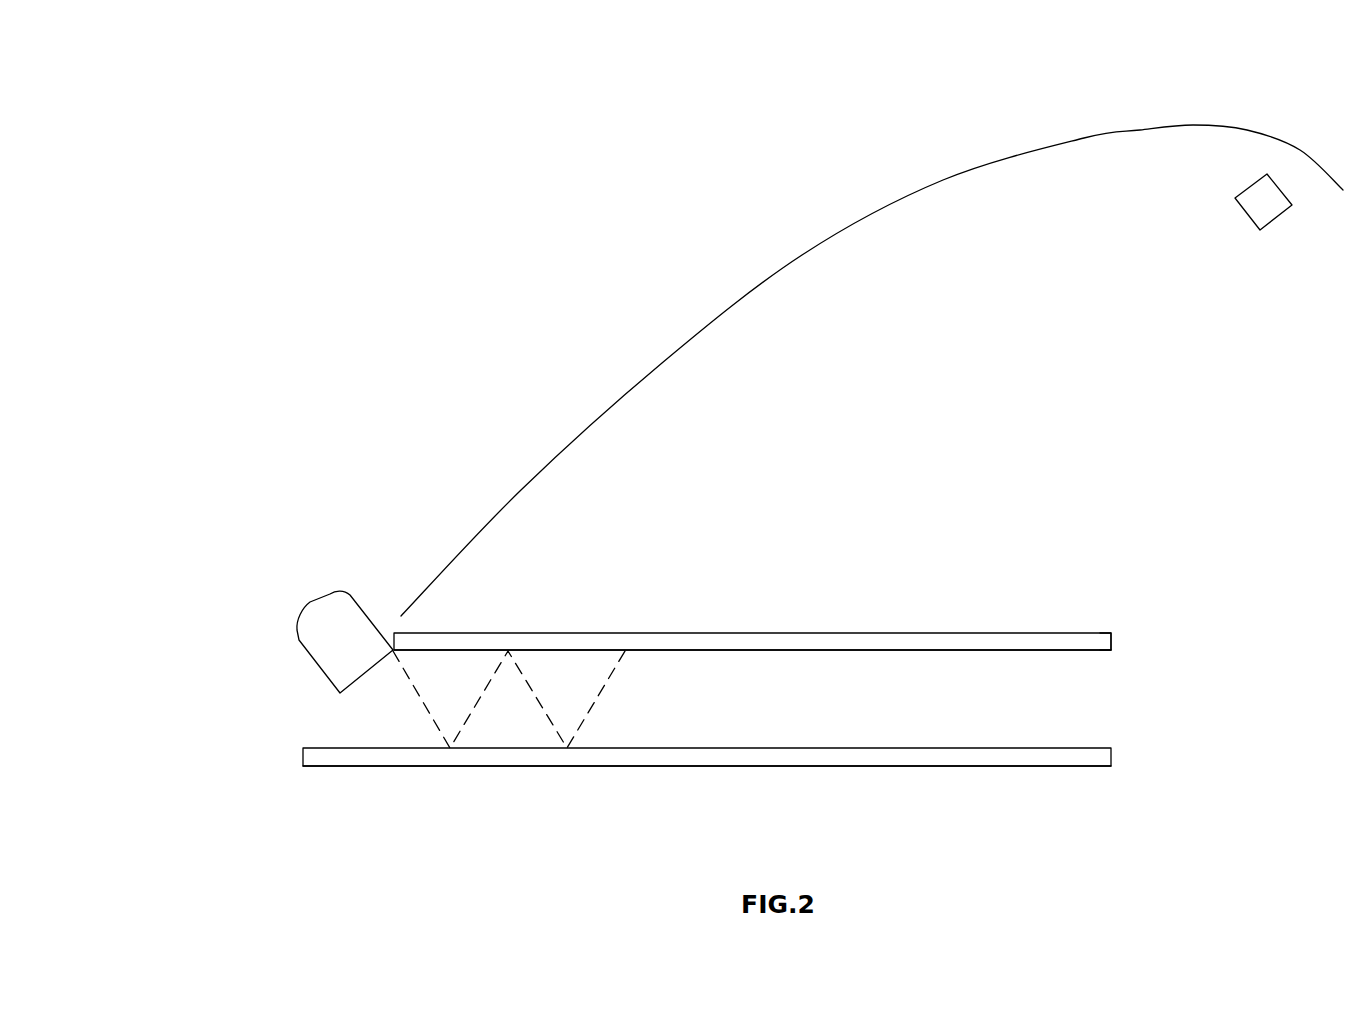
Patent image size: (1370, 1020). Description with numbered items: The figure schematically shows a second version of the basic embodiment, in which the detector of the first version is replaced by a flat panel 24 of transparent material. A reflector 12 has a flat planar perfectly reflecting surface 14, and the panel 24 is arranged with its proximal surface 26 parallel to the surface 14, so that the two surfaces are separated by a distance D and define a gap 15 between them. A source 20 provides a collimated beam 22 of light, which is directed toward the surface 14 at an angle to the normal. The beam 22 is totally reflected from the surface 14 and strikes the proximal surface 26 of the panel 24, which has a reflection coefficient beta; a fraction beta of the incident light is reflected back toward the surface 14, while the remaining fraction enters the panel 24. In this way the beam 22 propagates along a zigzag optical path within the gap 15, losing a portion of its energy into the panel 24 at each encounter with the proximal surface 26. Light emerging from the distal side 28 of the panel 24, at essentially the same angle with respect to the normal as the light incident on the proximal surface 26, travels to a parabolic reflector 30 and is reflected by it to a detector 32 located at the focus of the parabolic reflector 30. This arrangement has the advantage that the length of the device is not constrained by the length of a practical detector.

The reflector 12 is at (1007, 757).
The reflecting surface 14 is at (1097, 747).
The gap 15 is at (800, 711).
The source 20 is at (320, 613).
The collimated beam 22 is at (388, 713).
The flat panel 24 is at (1097, 633).
The proximal surface 26 is at (910, 640).
The distal side 28 is at (993, 632).
The parabolic reflector 30 is at (1248, 130).
The detector 32 is at (1268, 210).